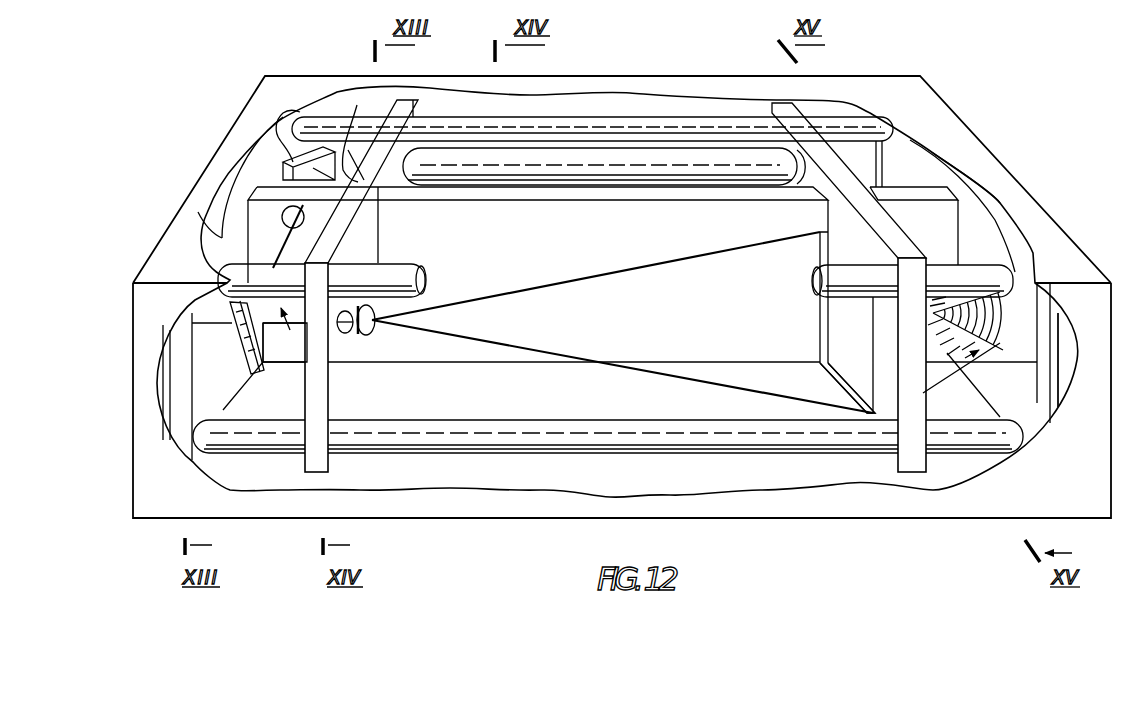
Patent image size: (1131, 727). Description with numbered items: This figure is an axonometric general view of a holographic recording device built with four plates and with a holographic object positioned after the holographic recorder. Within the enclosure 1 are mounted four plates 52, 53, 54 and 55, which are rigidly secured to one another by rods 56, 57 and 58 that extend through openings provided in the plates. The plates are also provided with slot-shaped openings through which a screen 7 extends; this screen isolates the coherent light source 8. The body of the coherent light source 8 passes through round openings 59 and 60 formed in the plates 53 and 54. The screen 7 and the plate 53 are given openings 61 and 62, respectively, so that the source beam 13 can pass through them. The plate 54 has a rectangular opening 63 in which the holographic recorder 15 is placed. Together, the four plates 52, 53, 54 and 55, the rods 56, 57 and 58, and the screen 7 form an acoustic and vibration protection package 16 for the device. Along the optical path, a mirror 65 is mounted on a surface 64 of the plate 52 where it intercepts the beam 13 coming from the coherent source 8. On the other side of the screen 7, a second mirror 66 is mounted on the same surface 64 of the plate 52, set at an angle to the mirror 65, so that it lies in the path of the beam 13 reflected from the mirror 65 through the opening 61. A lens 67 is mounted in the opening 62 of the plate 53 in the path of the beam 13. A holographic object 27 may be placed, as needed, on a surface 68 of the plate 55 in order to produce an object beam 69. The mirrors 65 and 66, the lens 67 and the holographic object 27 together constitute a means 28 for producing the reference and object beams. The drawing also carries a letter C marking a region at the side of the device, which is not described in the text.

The enclosure 1 is at (910, 96).
The screen 7 is at (930, 198).
The coherent light source 8 is at (578, 145).
The source beam 13 is at (365, 116).
The holographic recorder 15 is at (838, 256).
The acoustic and vibration protection package 16 is at (268, 472).
The holographic object 27 is at (998, 331).
The means for producing reference and object beams 28 is at (298, 332).
The plate 52 is at (260, 155).
The plate 53 is at (418, 107).
The plate 54 is at (782, 107).
The plate 55 is at (970, 175).
The rod 56 is at (878, 145).
The rod 57 is at (398, 268).
The rod 58 is at (808, 445).
The round opening 59 is at (405, 163).
The round opening 60 is at (790, 152).
The opening 61 is at (296, 233).
The opening 62 is at (346, 334).
The rectangular opening 63 is at (866, 363).
The surface 64 is at (197, 214).
The mirror 65 is at (283, 116).
The mirror 66 is at (243, 327).
The lens 67 is at (370, 336).
The surface 68 is at (990, 190).
The object beam 69 is at (975, 352).
The light exit region C is at (1065, 373).